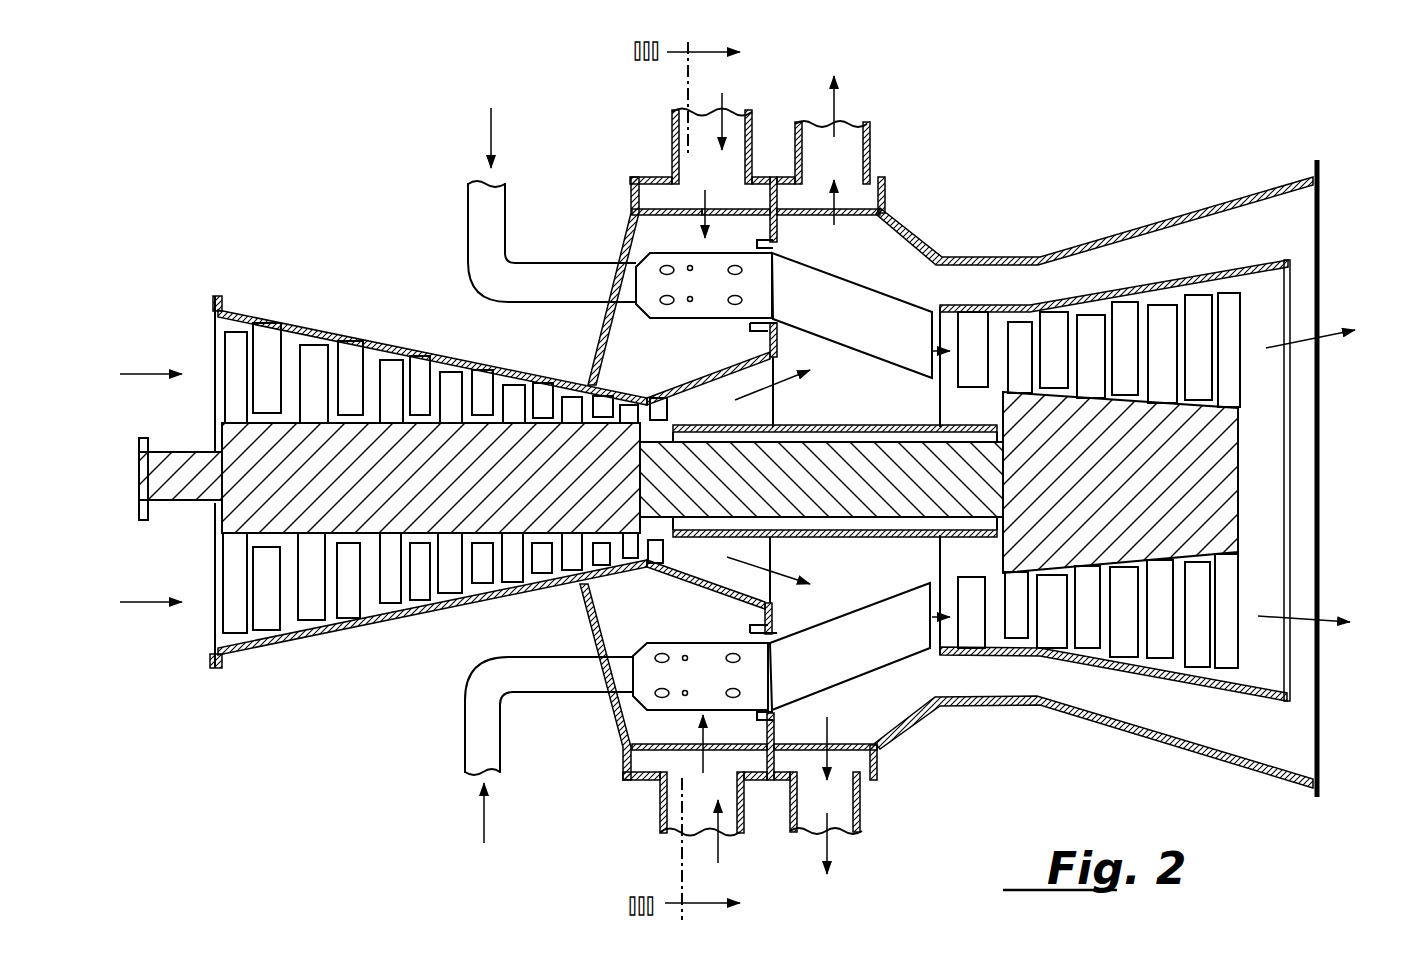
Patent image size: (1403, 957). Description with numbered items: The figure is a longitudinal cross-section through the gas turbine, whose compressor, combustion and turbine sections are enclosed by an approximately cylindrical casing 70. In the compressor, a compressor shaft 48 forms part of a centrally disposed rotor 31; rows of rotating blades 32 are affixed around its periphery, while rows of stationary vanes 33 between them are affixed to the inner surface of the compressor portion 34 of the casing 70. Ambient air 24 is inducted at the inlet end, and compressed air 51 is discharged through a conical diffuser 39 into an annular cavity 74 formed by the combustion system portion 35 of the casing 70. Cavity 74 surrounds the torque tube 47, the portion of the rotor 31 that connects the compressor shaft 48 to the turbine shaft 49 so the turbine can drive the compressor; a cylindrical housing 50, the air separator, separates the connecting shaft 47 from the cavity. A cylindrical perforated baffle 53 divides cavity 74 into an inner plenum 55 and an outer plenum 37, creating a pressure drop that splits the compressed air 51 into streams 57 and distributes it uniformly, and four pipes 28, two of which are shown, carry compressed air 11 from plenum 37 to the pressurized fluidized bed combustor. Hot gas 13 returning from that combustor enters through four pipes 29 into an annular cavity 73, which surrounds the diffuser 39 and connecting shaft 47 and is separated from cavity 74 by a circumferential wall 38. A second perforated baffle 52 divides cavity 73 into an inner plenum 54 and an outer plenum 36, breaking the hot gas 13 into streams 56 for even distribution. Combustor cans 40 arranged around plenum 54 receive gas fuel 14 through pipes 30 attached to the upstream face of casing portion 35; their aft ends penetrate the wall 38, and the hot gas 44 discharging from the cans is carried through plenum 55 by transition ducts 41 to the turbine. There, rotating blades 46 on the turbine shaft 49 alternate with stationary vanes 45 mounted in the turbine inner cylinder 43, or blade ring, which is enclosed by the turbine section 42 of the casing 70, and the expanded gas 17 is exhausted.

The compressed air 11 is at (835, 110).
The hot gas 13 is at (724, 104).
The gas fuel 14 is at (490, 128).
The expanded gas 17 is at (1332, 326).
The ambient air 24 is at (145, 372).
The pipes 28 is at (871, 142).
The pipes 29 is at (672, 140).
The pipes 30 is at (485, 233).
The rotor 31 is at (141, 513).
The rotating blades 32 is at (232, 390).
The stationary vanes 33 is at (279, 342).
The compressor portion of the casing 34 is at (409, 345).
The combustion system portion of the casing 35 is at (604, 328).
The outer annular plenum 36 is at (648, 178).
The outer annular plenum 37 is at (803, 194).
The circumferential wall 38 is at (778, 236).
The diffuser 39 is at (722, 370).
The combustor cans 40 is at (660, 306).
The transition duct 41 is at (846, 340).
The turbine section of the casing 42 is at (1153, 222).
The turbine inner cylinder 43 is at (1157, 283).
The hot gas 44 is at (942, 622).
The stationary vanes 45 is at (973, 317).
The rotating blades 46 is at (1017, 322).
The torque tube 47 is at (836, 484).
The compressor shaft 48 is at (461, 484).
The turbine shaft 49 is at (1143, 494).
The cylindrical housing 50 is at (853, 538).
The compressed air 51 is at (788, 380).
The cylindrical perforated baffle 52 is at (694, 217).
The cylindrical perforated baffle 53 is at (847, 217).
The inner annular plenum 54 is at (674, 377).
The inner annular plenum 55 is at (916, 284).
The streams 56 is at (707, 197).
The streams 57 is at (840, 178).
The casing 70 is at (223, 297).
The annular cavity 73 is at (650, 233).
The annular cavity 74 is at (900, 226).